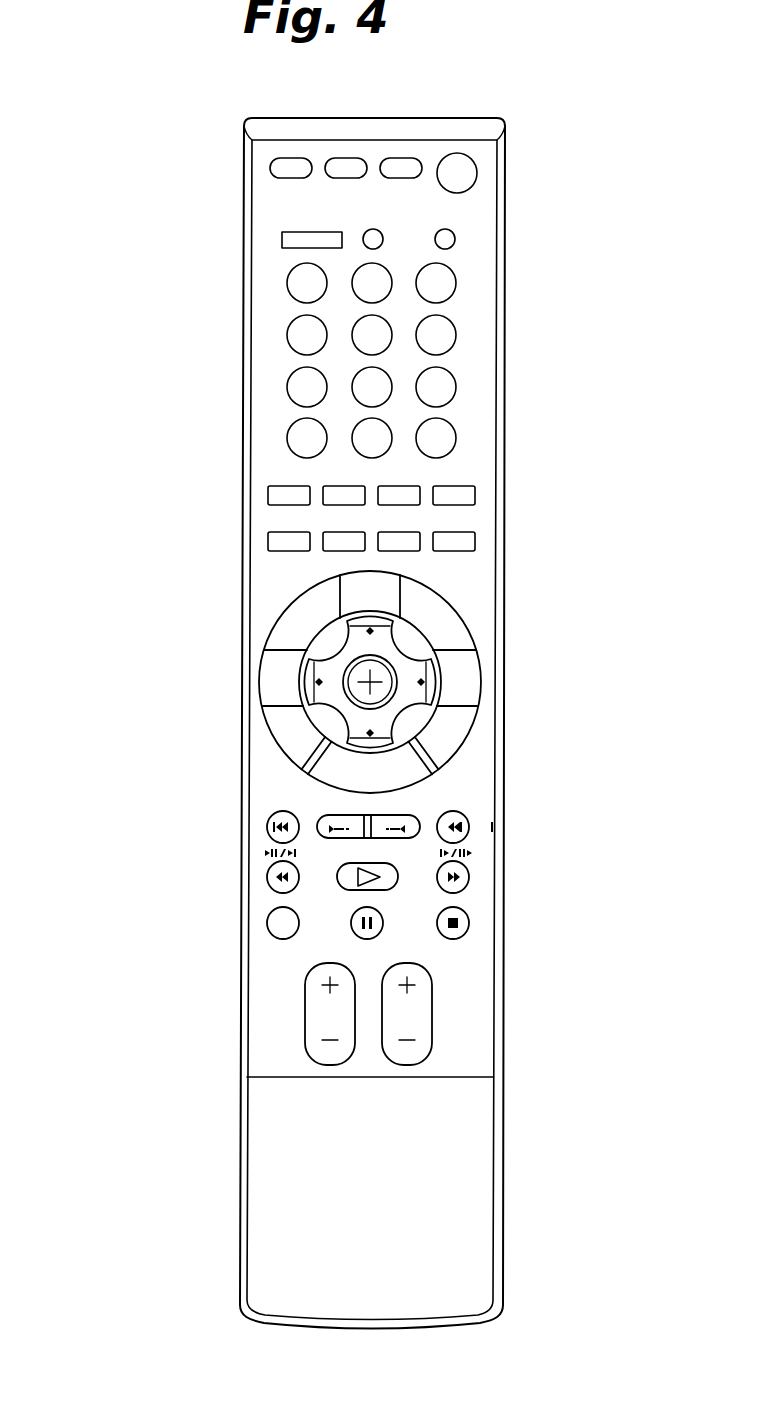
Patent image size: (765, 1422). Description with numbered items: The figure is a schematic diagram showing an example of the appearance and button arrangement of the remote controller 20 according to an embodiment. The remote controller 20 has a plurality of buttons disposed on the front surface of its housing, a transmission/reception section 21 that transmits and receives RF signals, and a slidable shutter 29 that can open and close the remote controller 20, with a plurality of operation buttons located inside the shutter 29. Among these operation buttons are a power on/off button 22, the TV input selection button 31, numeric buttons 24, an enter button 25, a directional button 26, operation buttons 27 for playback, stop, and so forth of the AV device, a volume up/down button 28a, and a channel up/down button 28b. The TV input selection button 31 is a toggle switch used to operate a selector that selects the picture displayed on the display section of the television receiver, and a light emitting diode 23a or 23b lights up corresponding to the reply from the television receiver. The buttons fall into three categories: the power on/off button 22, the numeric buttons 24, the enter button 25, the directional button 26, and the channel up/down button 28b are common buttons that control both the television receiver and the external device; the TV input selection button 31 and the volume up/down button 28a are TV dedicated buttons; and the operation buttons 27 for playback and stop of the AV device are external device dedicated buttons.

The remote controller 20 is at (102, 114).
The transmission/reception section 21 is at (452, 118).
The power on/off button 22 is at (478, 172).
The light emitting diode (LED) 23a is at (383, 242).
The light emitting diode (LED) 23b is at (455, 240).
The numeric buttons 24 is at (507, 272).
The enter button 25 is at (355, 692).
The directional button 26 is at (327, 661).
The operation buttons 27 is at (505, 803).
The volume up/down button 28a is at (322, 1028).
The channel up/down button 28b is at (418, 1010).
The slidable shutter 29 is at (418, 1203).
The TV input selection button 31 is at (282, 240).